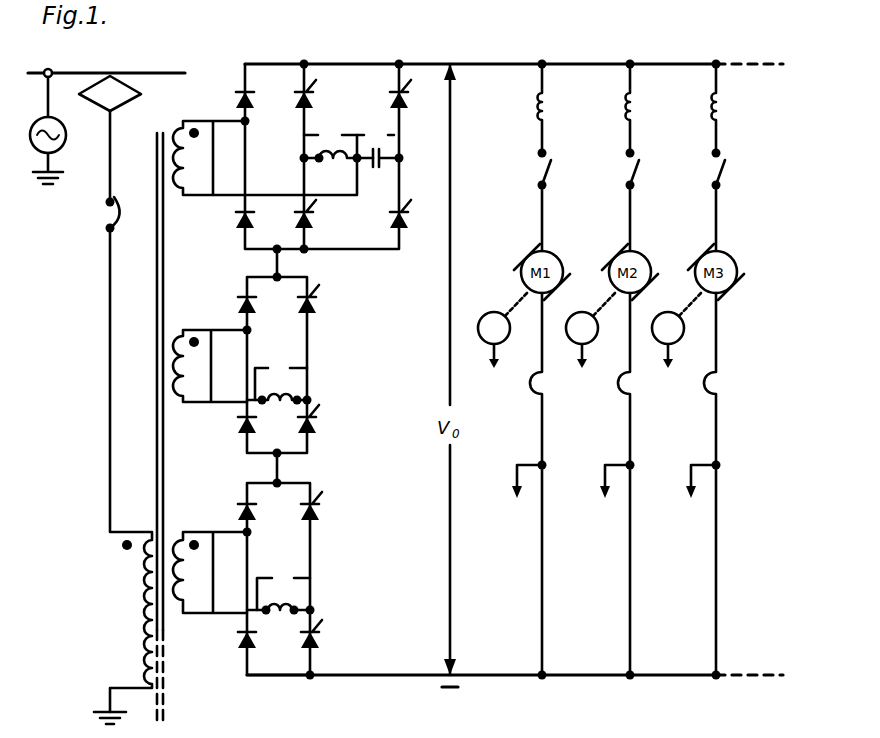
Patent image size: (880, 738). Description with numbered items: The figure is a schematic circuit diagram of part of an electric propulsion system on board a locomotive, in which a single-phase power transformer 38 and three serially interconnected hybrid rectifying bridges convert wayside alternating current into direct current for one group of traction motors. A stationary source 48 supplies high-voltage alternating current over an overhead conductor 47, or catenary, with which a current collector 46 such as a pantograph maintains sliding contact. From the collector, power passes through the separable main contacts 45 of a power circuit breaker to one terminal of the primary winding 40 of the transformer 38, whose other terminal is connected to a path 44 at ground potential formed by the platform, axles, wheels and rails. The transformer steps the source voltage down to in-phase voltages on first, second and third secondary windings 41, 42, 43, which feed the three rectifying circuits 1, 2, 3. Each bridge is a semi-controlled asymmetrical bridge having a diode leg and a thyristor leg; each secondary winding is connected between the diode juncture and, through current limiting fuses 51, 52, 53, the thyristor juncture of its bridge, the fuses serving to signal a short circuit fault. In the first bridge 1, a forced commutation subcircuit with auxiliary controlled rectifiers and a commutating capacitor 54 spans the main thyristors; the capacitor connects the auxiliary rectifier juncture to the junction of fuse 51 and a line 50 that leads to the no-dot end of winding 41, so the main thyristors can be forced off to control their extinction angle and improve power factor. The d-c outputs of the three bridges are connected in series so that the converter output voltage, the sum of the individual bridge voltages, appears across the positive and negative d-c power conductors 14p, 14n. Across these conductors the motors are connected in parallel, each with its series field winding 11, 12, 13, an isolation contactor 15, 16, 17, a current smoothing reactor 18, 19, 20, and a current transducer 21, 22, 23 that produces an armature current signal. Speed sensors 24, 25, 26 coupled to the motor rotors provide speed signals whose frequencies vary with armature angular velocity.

The first rectifying circuit 1 is at (313, 169).
The second rectifying circuit 2 is at (277, 378).
The third rectifying circuit 3 is at (270, 579).
The field winding 11 is at (533, 386).
The field winding 12 is at (621, 386).
The field winding 13 is at (707, 386).
The positive d-c power conductor 14p is at (496, 64).
The negative d-c power conductor 14n is at (512, 675).
The isolation contactor 15 is at (548, 178).
The isolation contactor 16 is at (636, 178).
The isolation contactor 17 is at (722, 178).
The current smoothing reactor 18 is at (547, 104).
The current smoothing reactor 19 is at (635, 104).
The current smoothing reactor 20 is at (721, 104).
The current transducer 21 is at (546, 468).
The current transducer 22 is at (634, 468).
The current transducer 23 is at (722, 468).
The speed sensor 24 is at (471, 304).
The speed sensor 25 is at (559, 304).
The speed sensor 26 is at (645, 304).
The power transformer 38 is at (214, 721).
The primary winding 40 is at (135, 600).
The first secondary winding 41 is at (170, 164).
The second secondary winding 42 is at (170, 372).
The third secondary winding 43 is at (180, 530).
The path at ground potential 44 is at (110, 702).
The separable main contacts of power circuit breaker 45 is at (100, 218).
The current collector 46 is at (115, 110).
The overhead conductor 47 is at (142, 71).
The stationary source 48 is at (64, 142).
The line 50 is at (279, 194).
The current limiting fuse 51 is at (338, 168).
The current limiting fuse 52 is at (300, 397).
The current limiting fuse 53 is at (296, 606).
The commutating capacitor 54 is at (377, 172).